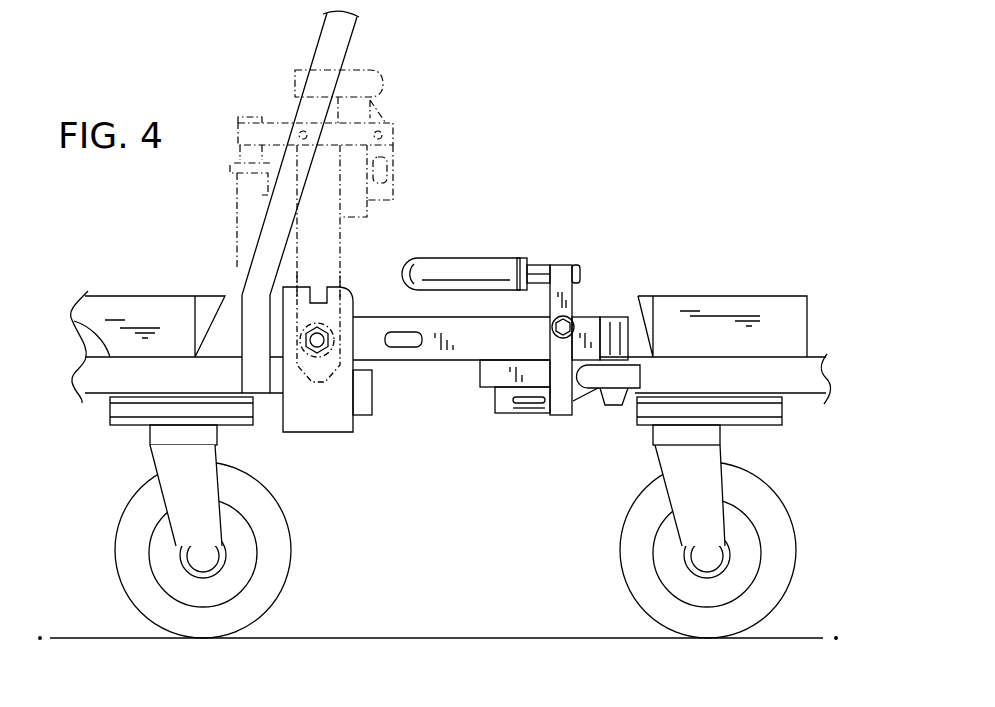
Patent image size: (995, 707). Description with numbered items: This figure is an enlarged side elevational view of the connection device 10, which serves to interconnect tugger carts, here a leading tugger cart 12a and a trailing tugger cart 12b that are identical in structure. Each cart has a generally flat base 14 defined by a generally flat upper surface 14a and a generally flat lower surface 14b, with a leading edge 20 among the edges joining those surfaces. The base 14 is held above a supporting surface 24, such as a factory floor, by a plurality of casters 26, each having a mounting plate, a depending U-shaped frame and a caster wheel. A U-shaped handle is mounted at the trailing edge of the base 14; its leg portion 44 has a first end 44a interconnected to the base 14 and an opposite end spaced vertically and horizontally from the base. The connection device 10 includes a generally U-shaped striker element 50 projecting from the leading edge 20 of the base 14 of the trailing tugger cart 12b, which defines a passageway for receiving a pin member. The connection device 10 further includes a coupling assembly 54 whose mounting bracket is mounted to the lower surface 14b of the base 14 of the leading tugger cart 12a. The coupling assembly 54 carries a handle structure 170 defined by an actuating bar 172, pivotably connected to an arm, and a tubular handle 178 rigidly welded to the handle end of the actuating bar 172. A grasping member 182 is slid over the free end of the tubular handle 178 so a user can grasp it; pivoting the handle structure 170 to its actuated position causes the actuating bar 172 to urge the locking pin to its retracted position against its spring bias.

The connection device 10 is at (432, 393).
The leading tugger cart 12a is at (456, 531).
The trailing tugger cart 12b is at (609, 479).
The base 14 is at (85, 377).
The upper surface 14a is at (76, 317).
The lower surface 14b is at (85, 405).
The leading edge 20 is at (610, 318).
The supporting surface 24 is at (473, 638).
The caster 26 is at (292, 523).
The leg portion 44 is at (323, 37).
The first end 44a is at (262, 395).
The striker element 50 is at (600, 386).
The coupling assembly 54 is at (490, 399).
The handle structure 170 is at (606, 319).
The actuating bar 172 is at (566, 279).
The tubular handle 178 is at (476, 244).
The grasping member 182 is at (420, 262).